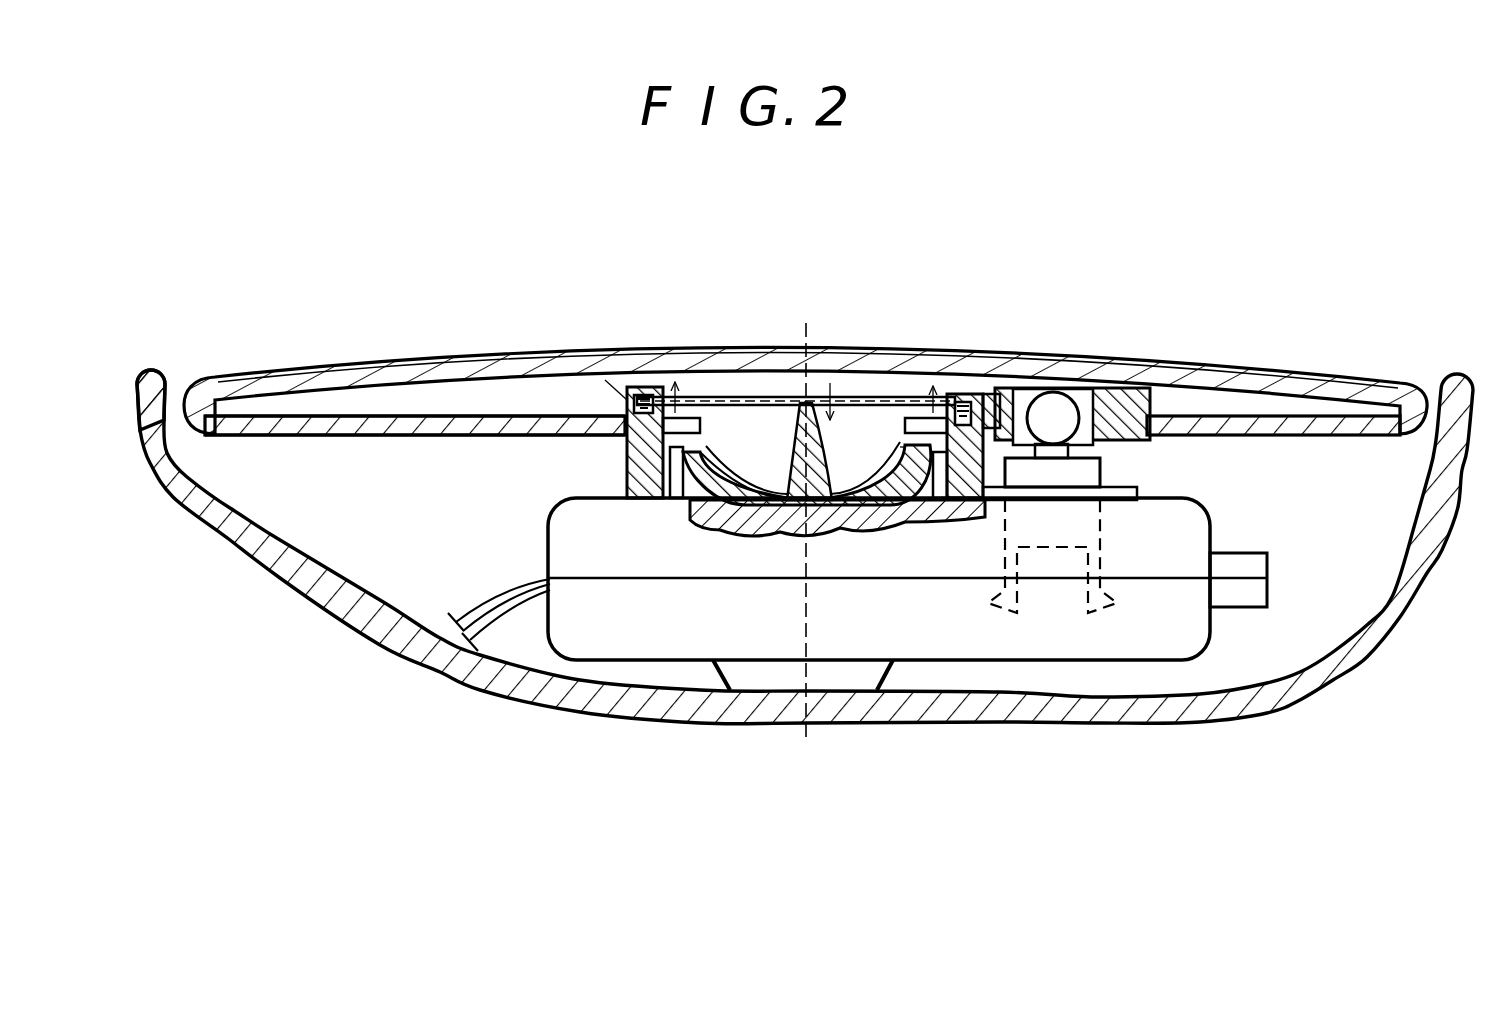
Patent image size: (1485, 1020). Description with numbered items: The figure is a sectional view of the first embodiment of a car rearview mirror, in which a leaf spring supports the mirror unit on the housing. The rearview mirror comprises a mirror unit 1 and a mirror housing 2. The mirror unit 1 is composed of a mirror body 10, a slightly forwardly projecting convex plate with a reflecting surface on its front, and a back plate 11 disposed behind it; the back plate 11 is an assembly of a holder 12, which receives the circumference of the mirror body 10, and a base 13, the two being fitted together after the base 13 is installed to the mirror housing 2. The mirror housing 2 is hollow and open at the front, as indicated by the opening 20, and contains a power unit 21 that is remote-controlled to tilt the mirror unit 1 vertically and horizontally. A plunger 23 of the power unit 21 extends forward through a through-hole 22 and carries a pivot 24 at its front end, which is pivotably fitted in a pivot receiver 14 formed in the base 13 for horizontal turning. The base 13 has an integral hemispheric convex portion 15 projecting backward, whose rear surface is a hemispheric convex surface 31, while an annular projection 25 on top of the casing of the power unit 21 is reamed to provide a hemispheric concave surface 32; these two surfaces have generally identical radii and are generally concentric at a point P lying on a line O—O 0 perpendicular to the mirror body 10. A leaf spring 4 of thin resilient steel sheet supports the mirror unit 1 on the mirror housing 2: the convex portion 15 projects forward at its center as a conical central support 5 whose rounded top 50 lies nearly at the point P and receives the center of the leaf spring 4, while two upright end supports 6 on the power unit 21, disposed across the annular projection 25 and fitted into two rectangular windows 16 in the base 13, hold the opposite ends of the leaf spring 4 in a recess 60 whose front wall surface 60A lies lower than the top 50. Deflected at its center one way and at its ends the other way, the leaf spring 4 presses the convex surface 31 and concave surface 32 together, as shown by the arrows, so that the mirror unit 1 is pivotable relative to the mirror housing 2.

The mirror unit 1 is at (348, 362).
The mirror housing 2 is at (392, 652).
The leaf spring 4 is at (860, 396).
The central support 5 is at (792, 432).
The end supports 6 is at (652, 396).
The mirror body 10 is at (482, 356).
The back plate 11 is at (802, 482).
The holder 12 is at (392, 432).
The base 13 is at (378, 486).
The pivot receiver 14 is at (1047, 400).
The hemispheric convex portion 15 is at (903, 440).
The rectangular windows 16 is at (615, 392).
The opening 20 is at (176, 383).
The power unit 21 is at (562, 650).
The through-hole 22 is at (1088, 510).
The plunger 23 is at (1085, 478).
The pivot 24 is at (1062, 418).
The annular projection 25 is at (912, 515).
The hemispheric convex surface 31 is at (698, 502).
The hemispheric concave surface 32 is at (720, 450).
The top of the central support 50 is at (800, 400).
The recess 60 is at (626, 452).
The front wall surface 60A is at (643, 392).
The line O—O 0 is at (814, 534).